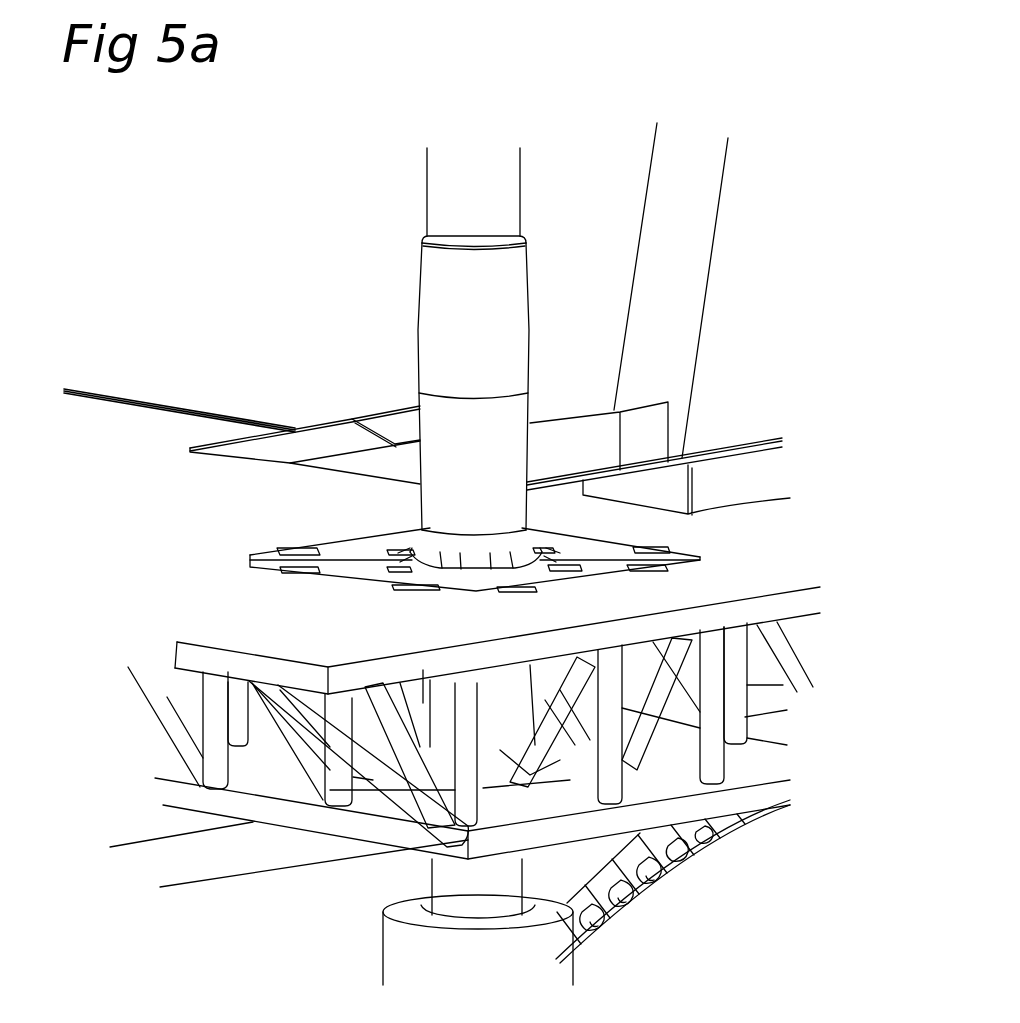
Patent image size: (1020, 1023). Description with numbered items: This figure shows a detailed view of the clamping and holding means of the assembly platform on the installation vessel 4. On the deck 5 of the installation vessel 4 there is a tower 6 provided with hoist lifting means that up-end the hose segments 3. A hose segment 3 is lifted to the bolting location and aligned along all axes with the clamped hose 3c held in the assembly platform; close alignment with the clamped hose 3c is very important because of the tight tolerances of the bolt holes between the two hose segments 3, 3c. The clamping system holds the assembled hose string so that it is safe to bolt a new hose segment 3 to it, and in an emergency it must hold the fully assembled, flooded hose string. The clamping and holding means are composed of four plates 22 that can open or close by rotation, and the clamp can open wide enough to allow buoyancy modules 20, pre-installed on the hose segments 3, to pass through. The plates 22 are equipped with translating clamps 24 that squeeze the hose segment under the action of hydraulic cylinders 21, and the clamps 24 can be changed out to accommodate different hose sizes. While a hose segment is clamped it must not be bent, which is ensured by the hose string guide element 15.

The hose segment 3 is at (455, 322).
The installation vessel 4 is at (156, 658).
The deck 5 is at (118, 427).
The tower 6 is at (680, 268).
The hose string guide element 15 is at (720, 893).
The buoyancy modules 20 is at (386, 930).
The hydraulic cylinders 21 is at (527, 700).
The plates 22 is at (383, 575).
The translating clamps 24 is at (418, 545).
The clamped hose 3c is at (455, 874).